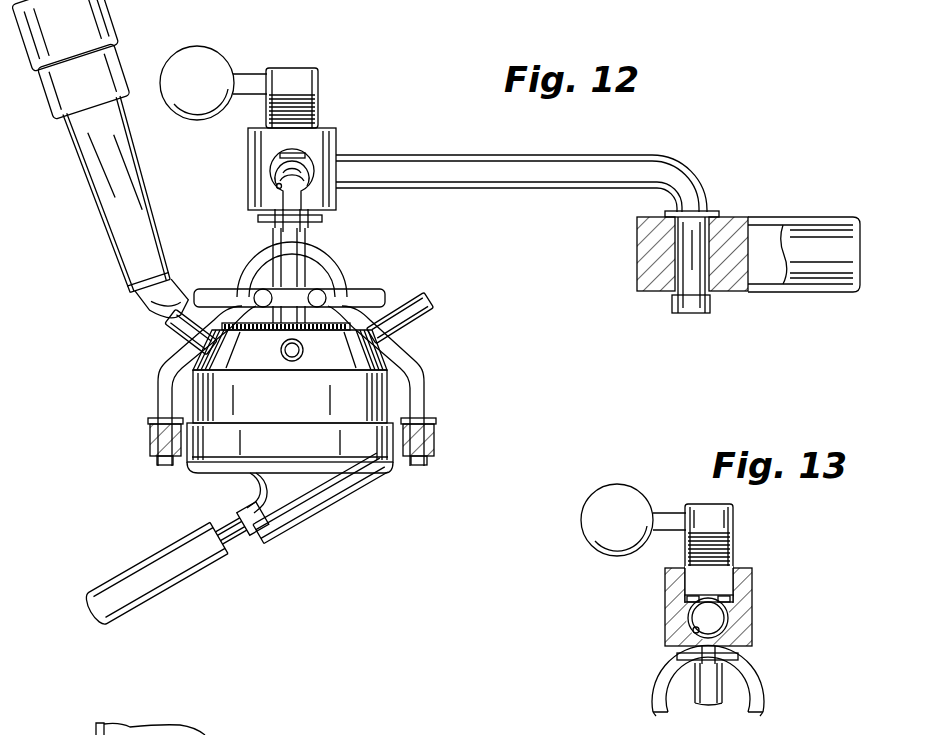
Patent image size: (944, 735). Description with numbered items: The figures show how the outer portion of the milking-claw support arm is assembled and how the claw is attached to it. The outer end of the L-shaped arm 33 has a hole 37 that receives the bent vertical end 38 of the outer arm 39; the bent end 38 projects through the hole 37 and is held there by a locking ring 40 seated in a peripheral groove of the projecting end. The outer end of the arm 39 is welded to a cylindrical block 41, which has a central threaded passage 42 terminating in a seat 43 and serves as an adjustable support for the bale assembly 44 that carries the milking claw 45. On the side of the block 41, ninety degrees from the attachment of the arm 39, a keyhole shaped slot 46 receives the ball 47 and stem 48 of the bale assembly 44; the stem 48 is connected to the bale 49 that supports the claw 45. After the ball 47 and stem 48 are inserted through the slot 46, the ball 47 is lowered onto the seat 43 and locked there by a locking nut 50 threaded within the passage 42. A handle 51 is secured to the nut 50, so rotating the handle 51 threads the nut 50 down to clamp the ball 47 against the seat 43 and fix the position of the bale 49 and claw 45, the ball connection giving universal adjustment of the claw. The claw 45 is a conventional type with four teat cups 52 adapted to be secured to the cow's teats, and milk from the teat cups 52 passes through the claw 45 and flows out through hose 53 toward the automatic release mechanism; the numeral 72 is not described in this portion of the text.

In FIG. 12, the L-shaped arm 33 is at (842, 216).
In FIG. 12, the hole 37 is at (676, 265).
In FIG. 12, the bent vertical end 38 is at (700, 240).
In FIG. 12, the outer arm 39 is at (607, 143).
In FIG. 12, the locking ring 40 is at (717, 297).
In FIG. 12, the cylindrical block 41 is at (336, 137).
In FIG. 13, the cylindrical block 41 is at (755, 575).
In FIG. 13, the central threaded passage 42 is at (730, 607).
In FIG. 13, the seat 43 is at (693, 631).
In FIG. 12, the bale assembly 44 is at (362, 290).
In FIG. 12, the milking claw 45 is at (362, 490).
In FIG. 12, the keyhole shaped slot 46 is at (277, 187).
In FIG. 12, the ball 47 is at (271, 172).
In FIG. 13, the ball 47 is at (700, 617).
In FIG. 12, the stem 48 is at (275, 220).
In FIG. 13, the stem 48 is at (698, 663).
In FIG. 12, the bale 49 is at (325, 252).
In FIG. 13, the bale 49 is at (750, 700).
In FIG. 12, the locking nut 50 is at (319, 102).
In FIG. 13, the locking nut 50 is at (737, 545).
In FIG. 12, the handle 51 is at (230, 54).
In FIG. 13, the handle 51 is at (645, 486).
In FIG. 12, the teat cups 52 is at (80, 150).
In FIG. 12, the hose 53 is at (180, 592).
In FIG. 12, the lever 72 is at (507, 733).